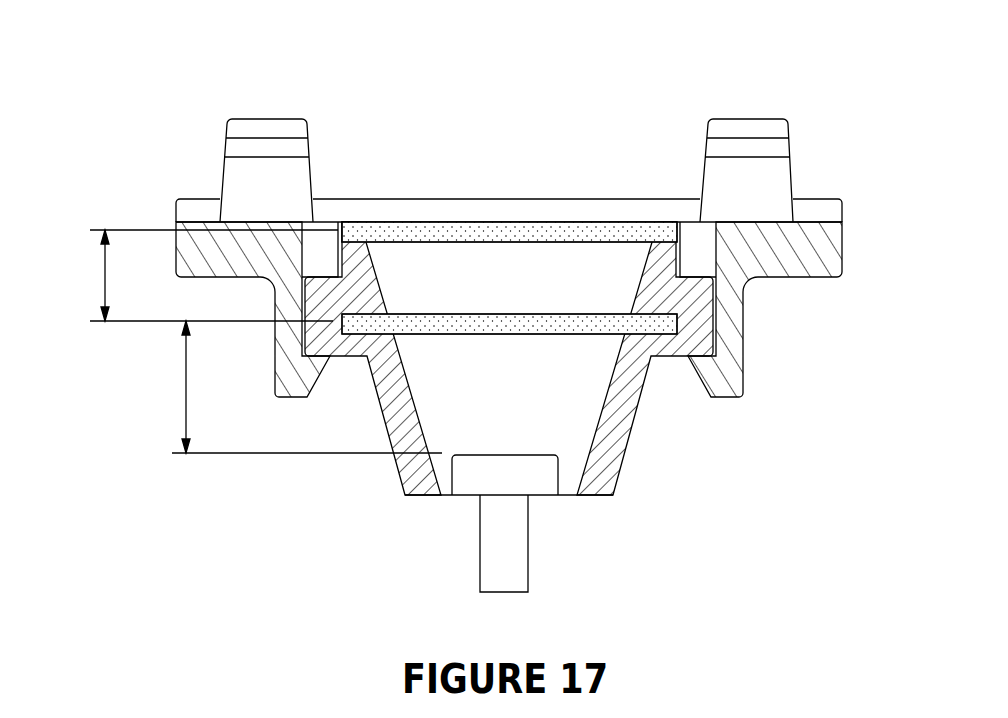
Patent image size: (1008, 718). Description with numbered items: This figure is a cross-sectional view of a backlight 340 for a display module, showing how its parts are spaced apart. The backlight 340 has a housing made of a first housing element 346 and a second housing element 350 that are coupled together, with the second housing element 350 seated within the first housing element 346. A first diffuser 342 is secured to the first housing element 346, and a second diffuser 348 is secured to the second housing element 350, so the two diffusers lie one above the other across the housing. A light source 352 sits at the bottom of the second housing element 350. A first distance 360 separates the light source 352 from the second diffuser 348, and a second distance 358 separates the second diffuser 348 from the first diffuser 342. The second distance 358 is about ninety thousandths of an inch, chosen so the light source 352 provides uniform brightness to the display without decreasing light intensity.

The backlight 340 is at (467, 302).
The first diffuser 342 is at (530, 242).
The first housing element 346 is at (793, 280).
The second diffuser 348 is at (525, 314).
The second housing element 350 is at (632, 433).
The light source 352 is at (535, 485).
The second distance 358 is at (103, 277).
The first distance 360 is at (185, 397).